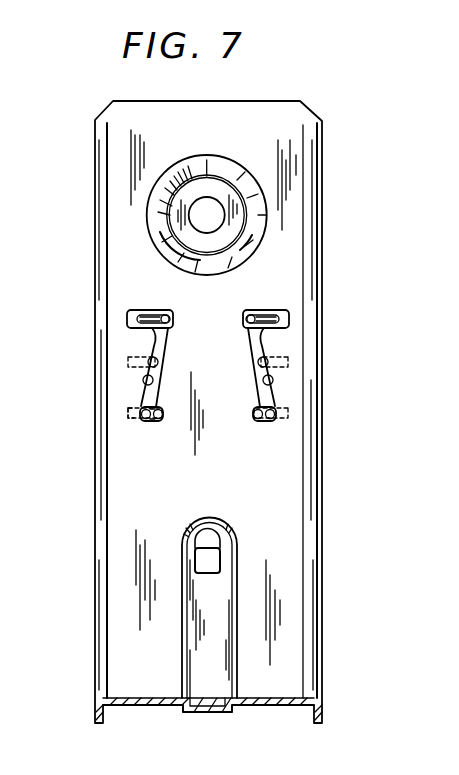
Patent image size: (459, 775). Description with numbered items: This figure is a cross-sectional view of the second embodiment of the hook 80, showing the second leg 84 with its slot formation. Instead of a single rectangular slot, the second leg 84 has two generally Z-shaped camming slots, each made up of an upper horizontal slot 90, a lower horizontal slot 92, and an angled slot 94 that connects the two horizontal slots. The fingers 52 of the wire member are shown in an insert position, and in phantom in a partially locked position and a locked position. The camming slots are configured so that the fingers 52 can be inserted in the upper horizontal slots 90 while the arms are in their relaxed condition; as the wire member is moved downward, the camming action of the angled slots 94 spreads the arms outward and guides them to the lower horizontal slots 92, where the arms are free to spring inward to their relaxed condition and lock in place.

The hook (second embodiment) 80 is at (343, 110).
The second leg 84 is at (285, 243).
The fingers 52 is at (135, 318).
The upper horizontal slot 90 is at (160, 312).
The angled slot 94 is at (140, 375).
The lower horizontal slot 92 is at (143, 418).